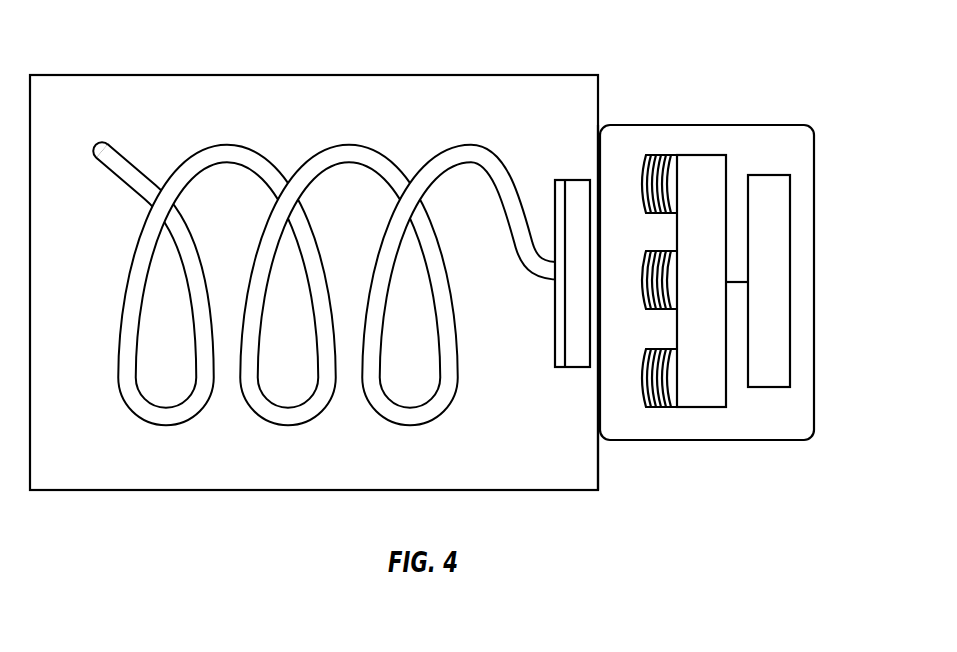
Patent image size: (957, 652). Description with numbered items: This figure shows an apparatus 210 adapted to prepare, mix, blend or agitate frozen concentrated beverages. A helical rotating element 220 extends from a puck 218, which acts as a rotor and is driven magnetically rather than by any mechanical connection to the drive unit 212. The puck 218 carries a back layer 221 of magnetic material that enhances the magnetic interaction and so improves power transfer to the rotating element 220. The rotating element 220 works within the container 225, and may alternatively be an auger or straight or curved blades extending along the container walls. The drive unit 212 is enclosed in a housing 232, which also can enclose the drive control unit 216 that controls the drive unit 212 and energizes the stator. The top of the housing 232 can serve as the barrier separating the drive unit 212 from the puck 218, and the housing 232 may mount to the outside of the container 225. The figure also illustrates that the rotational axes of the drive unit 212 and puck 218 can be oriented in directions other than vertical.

The apparatus 210 is at (588, 64).
The rotating element 220 is at (352, 143).
The puck 218 is at (580, 180).
The back layer 221 is at (560, 368).
The housing 232 is at (724, 125).
The drive unit 212 is at (727, 172).
The drive control unit 216 is at (790, 323).
The container 225 is at (602, 452).